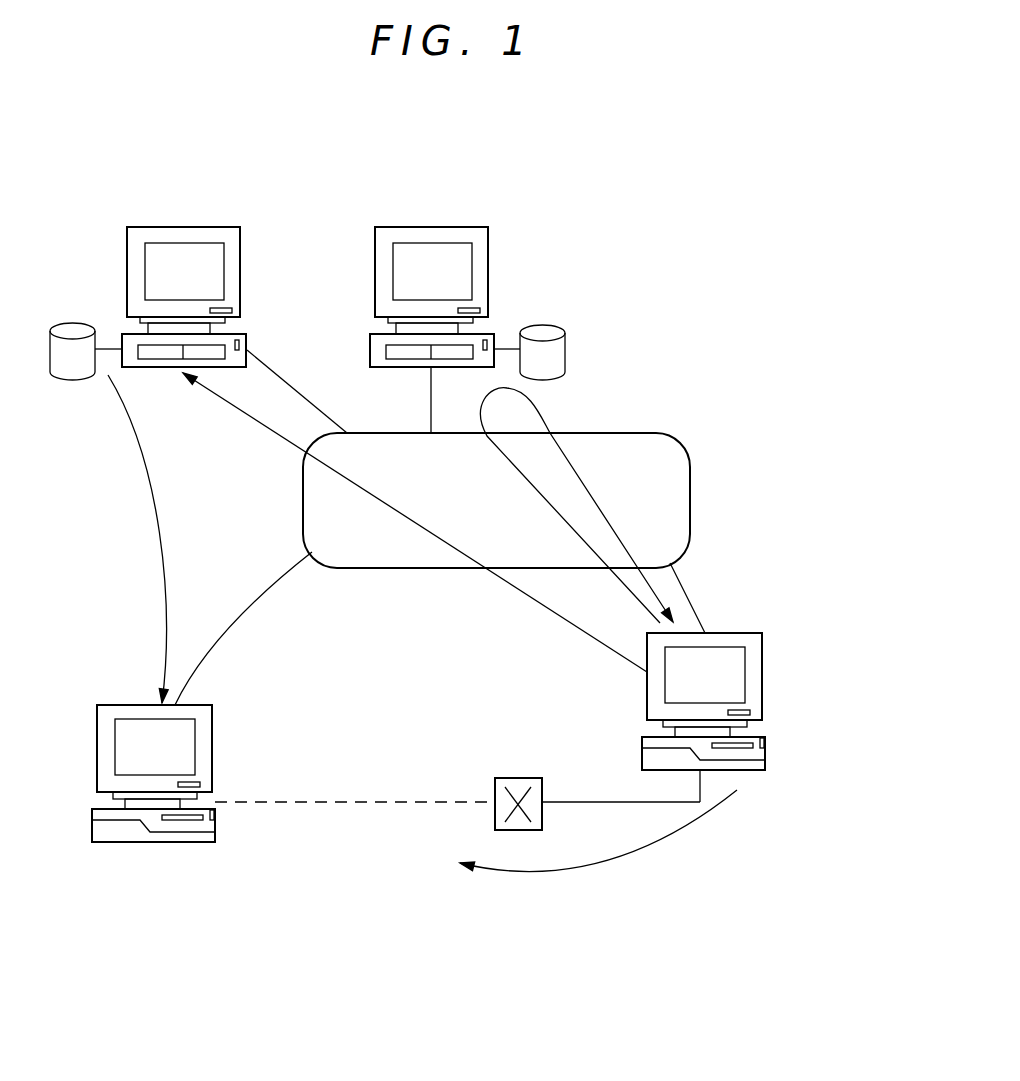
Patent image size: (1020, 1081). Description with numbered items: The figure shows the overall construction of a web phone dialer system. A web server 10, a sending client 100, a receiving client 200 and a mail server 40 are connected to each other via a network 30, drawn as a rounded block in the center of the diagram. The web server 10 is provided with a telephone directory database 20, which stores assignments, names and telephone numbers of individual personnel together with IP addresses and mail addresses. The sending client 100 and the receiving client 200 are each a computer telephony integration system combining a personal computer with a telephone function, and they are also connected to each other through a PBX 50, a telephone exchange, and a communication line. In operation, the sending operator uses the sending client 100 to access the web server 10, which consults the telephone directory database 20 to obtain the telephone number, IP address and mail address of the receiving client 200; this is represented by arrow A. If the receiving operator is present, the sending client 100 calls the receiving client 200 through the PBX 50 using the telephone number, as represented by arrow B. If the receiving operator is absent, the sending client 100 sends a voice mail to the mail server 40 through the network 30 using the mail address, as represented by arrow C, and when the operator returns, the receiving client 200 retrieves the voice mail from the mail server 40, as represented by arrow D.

The web server 10 is at (490, 243).
The telephone directory database 20 is at (550, 325).
The network 30 is at (690, 472).
The mail server 40 is at (240, 243).
The PBX 50 is at (542, 787).
The sending client 100 is at (745, 633).
The receiving client 200 is at (200, 705).
The arrow A is at (606, 520).
The arrow B is at (613, 862).
The arrow C is at (395, 510).
The arrow D is at (160, 520).